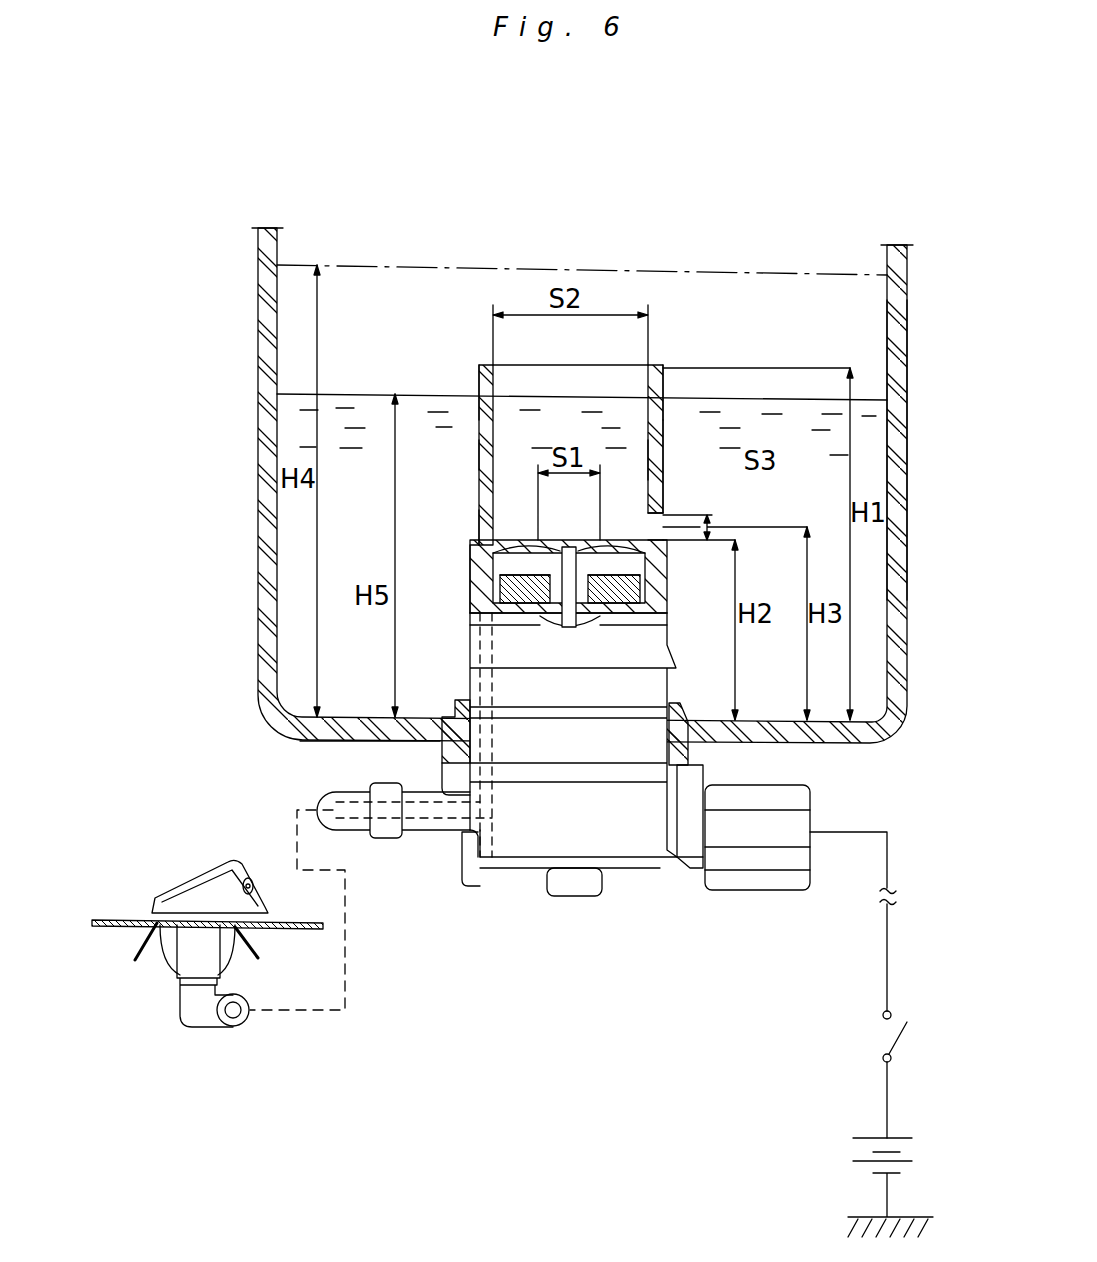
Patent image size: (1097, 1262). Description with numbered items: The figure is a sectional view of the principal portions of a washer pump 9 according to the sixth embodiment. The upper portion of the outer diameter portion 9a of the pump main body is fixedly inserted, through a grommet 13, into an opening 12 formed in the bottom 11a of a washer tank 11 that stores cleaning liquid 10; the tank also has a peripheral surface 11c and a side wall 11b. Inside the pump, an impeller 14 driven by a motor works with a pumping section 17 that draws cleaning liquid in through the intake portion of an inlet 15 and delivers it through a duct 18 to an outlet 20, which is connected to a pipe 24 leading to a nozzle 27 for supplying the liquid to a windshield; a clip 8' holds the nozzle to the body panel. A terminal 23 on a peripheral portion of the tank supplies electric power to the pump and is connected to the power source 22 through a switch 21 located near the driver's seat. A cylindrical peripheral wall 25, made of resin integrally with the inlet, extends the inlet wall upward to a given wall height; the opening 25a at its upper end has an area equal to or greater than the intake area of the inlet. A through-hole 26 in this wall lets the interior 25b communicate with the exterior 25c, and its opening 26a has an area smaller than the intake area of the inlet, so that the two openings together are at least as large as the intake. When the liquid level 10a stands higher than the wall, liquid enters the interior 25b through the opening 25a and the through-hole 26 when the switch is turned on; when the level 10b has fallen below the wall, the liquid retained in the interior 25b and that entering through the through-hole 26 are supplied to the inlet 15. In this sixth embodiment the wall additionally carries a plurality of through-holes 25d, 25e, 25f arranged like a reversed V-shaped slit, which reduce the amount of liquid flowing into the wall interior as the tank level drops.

The washer tank 11 is at (260, 262).
The bottom of the washer tank 11a is at (373, 741).
The tank side wall 11b is at (885, 307).
The peripheral surface of the tank 11c is at (909, 317).
The cleaning liquid 10 is at (850, 456).
The level of the cleaning liquid 10a is at (400, 264).
The level of the cleaning liquid 10b is at (795, 400).
The cylindrical peripheral wall 25 is at (477, 387).
The opening of the peripheral wall 25a is at (480, 389).
The interior of the peripheral wall 25b is at (661, 431).
The exterior of the peripheral wall 25c is at (664, 427).
The through-hole 25d is at (477, 450).
The through-hole 25e is at (647, 453).
The through-hole 25f is at (480, 525).
The impeller 14 is at (527, 557).
The inlet 15 is at (530, 550).
The pumping section 17 is at (470, 552).
The through-hole 26 is at (664, 514).
The opening of the through-hole 26a is at (664, 528).
The washer pump 9 is at (627, 840).
The outer diameter portion of the pump main body 9a is at (648, 743).
The opening 12 is at (458, 697).
The grommet 13 is at (697, 743).
The outlet 20 is at (470, 830).
The pipe 24 is at (350, 826).
The duct 18 is at (482, 866).
The terminal 23 is at (772, 833).
The switch 21 is at (878, 1033).
The power source 22 is at (853, 1150).
The washer nozzle 27 is at (187, 960).
The nozzle clip 8' is at (218, 959).